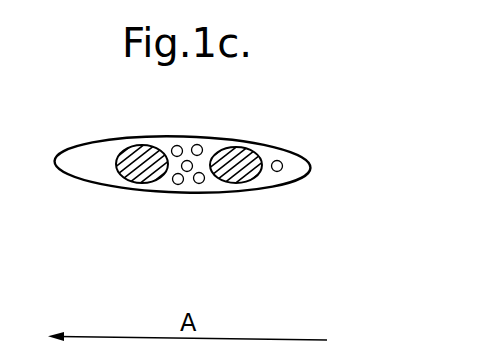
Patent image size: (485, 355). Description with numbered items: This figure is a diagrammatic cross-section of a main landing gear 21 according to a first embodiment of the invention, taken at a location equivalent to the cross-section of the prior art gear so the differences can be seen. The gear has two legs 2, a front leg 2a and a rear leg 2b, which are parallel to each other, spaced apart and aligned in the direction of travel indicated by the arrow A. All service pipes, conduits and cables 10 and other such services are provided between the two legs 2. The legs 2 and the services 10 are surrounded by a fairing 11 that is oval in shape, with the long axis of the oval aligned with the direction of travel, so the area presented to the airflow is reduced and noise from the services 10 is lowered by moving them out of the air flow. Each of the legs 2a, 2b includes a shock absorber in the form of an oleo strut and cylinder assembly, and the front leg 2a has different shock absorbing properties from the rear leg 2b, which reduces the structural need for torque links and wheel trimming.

The main landing gear 21 is at (235, 186).
The fairing 11 is at (274, 188).
The legs 2 is at (187, 186).
The front leg 2a is at (128, 146).
The rear leg 2b is at (226, 187).
The service pipes/conduits/cables 10 is at (189, 145).